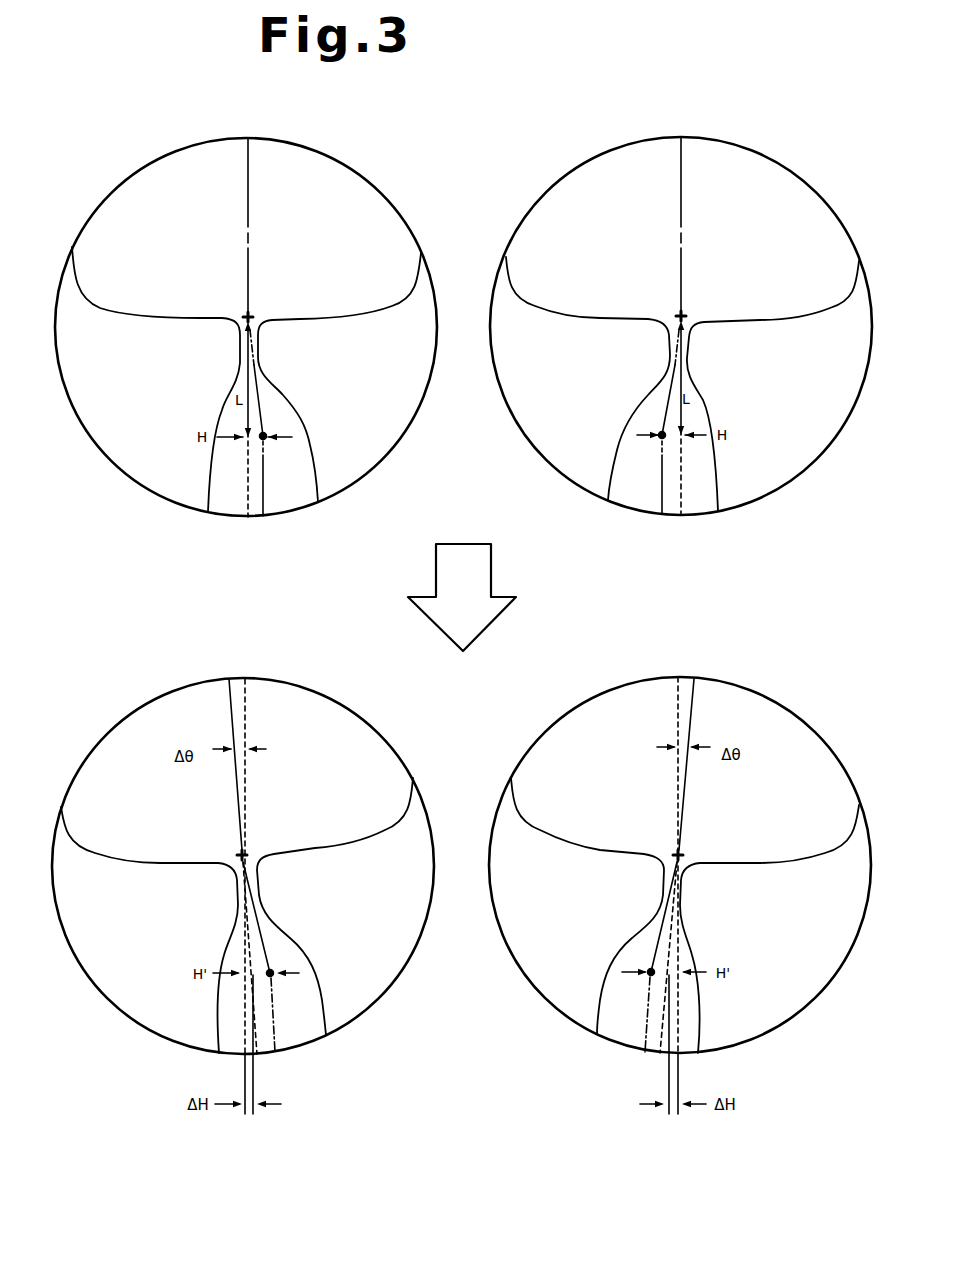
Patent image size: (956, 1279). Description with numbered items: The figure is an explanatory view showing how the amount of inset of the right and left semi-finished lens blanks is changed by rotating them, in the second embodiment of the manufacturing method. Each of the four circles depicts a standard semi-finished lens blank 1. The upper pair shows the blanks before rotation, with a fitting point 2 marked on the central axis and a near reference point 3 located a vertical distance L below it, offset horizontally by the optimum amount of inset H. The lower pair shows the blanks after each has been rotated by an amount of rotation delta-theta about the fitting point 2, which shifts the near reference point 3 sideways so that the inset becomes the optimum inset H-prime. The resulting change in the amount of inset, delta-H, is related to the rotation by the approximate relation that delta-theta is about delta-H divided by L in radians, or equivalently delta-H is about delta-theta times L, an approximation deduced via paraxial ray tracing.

The standard semi-finished lens blank 1 is at (140, 170).
The fitting point 2 is at (251, 314).
The near reference point 3 is at (265, 439).